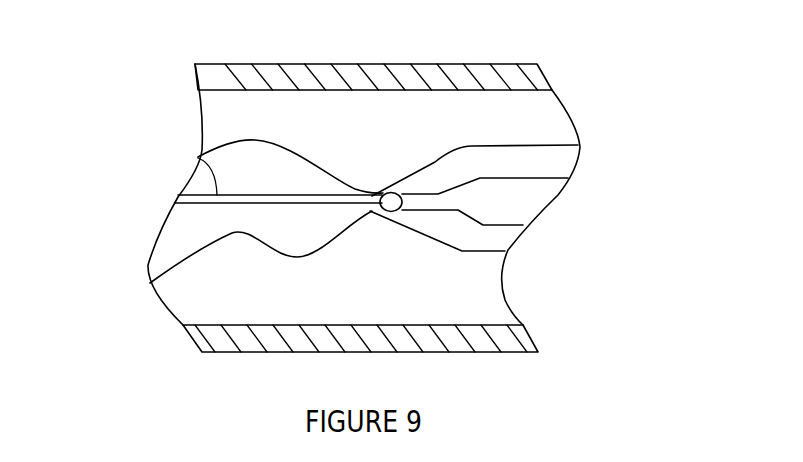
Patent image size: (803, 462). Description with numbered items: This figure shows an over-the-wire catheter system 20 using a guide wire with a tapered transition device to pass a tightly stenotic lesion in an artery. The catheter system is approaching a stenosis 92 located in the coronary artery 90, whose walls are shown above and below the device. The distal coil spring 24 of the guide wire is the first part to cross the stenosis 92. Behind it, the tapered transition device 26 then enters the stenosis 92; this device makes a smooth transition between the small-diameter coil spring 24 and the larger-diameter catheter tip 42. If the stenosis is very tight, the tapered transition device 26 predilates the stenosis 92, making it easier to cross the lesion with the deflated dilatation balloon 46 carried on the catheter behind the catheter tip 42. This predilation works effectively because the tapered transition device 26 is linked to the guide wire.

The catheter device 20 is at (197, 217).
The distal coil spring 24 is at (207, 168).
The tapered transition device 26 is at (392, 190).
The catheter tip 42 is at (432, 193).
The dilatation balloon 46 is at (520, 228).
The coronary artery 90 is at (545, 77).
The stenosis 92 is at (399, 328).